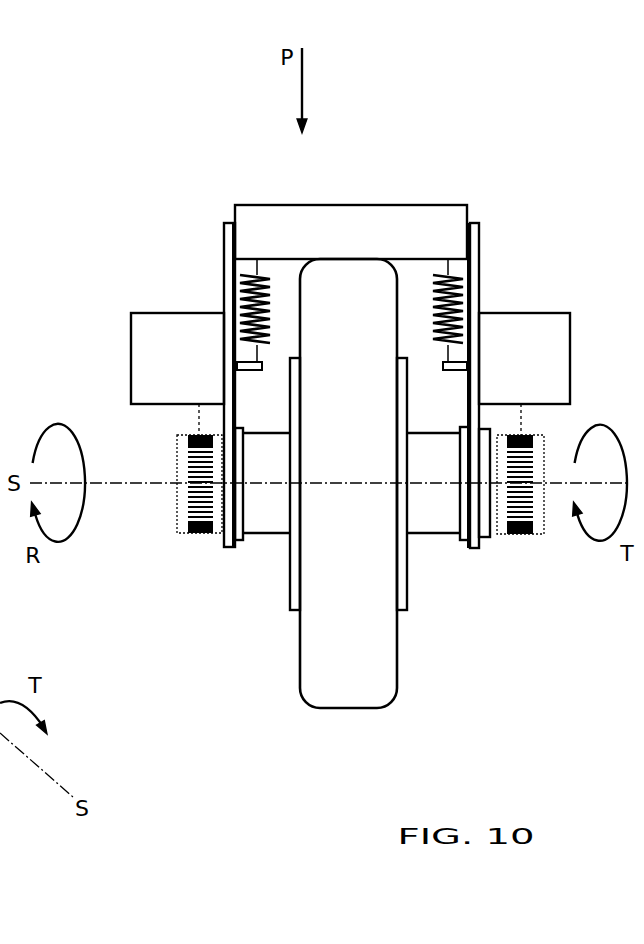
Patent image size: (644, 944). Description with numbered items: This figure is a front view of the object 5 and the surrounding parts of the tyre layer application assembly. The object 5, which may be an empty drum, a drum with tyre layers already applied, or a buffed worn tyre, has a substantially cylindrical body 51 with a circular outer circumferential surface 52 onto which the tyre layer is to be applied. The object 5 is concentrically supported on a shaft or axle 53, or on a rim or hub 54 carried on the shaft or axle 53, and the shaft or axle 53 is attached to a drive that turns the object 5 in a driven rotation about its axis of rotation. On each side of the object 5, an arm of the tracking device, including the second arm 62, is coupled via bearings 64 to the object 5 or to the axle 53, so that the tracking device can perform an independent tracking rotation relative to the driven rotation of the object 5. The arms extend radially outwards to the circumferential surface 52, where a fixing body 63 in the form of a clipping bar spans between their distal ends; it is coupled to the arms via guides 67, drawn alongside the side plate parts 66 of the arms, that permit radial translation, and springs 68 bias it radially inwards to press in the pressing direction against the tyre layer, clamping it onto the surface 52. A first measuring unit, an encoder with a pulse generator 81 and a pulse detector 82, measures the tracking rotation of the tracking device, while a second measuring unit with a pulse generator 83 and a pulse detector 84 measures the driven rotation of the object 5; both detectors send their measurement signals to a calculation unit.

The object 5 is at (341, 535).
The cylindrical body 51 is at (300, 680).
The outer circumferential surface 52 is at (362, 708).
The shaft or axle 53 is at (268, 515).
The rim or hub 54 is at (292, 400).
The second arm 62 is at (357, 314).
The fixing body 63 is at (348, 213).
The bearings 64 is at (241, 540).
The side plate 66 is at (223, 270).
The guides 67 is at (232, 242).
The springs 68 is at (258, 277).
The pulse generator 81 is at (545, 518).
The pulse detector 82 is at (556, 313).
The pulse generator 83 is at (177, 512).
The pulse detector 84 is at (142, 352).